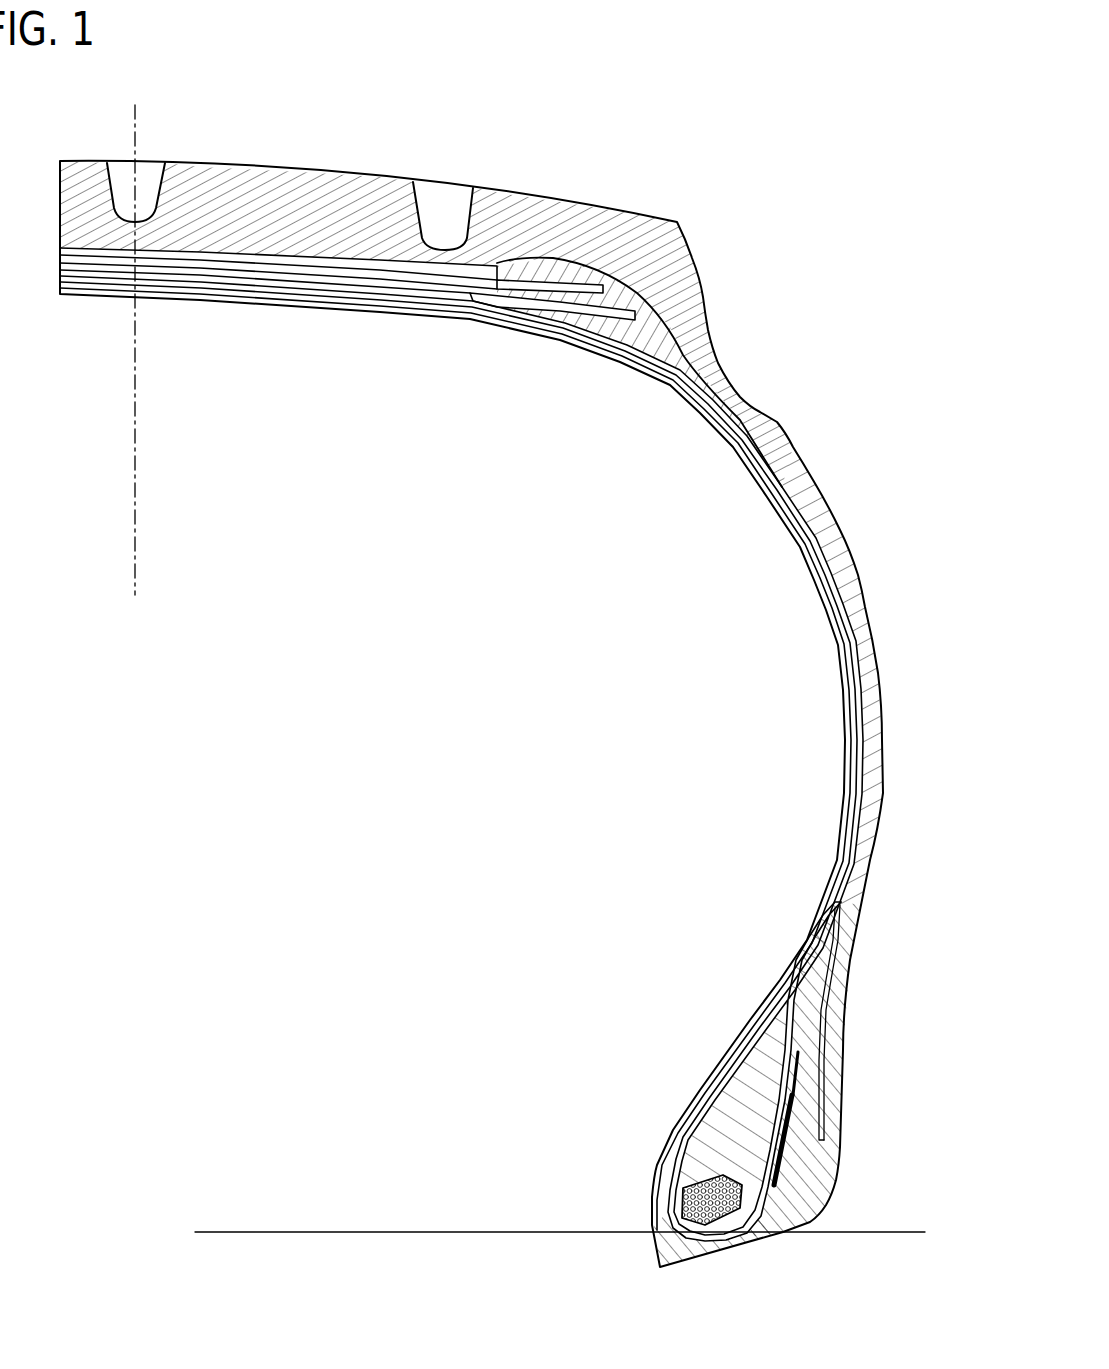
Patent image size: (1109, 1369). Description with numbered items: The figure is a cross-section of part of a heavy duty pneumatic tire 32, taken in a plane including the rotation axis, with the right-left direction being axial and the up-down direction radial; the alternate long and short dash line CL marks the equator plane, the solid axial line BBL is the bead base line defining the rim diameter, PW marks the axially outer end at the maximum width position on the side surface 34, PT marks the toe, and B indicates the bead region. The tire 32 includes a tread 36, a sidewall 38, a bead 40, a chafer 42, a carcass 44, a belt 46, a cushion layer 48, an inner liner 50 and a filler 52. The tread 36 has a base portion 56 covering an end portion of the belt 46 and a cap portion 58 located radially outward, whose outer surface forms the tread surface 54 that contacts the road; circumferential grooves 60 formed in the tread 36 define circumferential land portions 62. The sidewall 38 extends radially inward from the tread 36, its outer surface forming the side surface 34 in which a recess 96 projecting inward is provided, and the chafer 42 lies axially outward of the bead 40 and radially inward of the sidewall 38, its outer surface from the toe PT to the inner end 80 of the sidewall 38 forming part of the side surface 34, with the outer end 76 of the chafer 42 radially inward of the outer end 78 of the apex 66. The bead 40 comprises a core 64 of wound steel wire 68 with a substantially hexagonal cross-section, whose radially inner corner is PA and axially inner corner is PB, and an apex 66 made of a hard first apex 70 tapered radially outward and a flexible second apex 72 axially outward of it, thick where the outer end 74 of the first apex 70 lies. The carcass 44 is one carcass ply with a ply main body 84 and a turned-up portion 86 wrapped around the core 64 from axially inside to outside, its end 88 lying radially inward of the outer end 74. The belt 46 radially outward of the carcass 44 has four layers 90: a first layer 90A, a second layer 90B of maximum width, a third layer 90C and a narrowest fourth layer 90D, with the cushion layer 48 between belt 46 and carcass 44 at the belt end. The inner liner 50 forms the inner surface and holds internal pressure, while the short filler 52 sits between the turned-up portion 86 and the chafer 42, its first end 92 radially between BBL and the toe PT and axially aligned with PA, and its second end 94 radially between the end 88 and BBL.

The heavy duty pneumatic tire 32 is at (754, 201).
The side surface 34 is at (851, 561).
The tread 36 is at (339, 163).
The sidewall 38 is at (858, 615).
The bead 40 is at (723, 1068).
The chafer 42 is at (797, 1173).
The carcass 44 is at (232, 290).
The belt 46 is at (212, 250).
The cushion layer 48 is at (677, 370).
The inner liner 50 is at (172, 300).
The filler 52 is at (785, 1207).
The tread surface 54 is at (272, 160).
The base portion 56 is at (555, 258).
The cap portion 58 is at (513, 222).
The circumferential groove 60 is at (148, 160).
The circumferential land portion 62 is at (300, 200).
The core 64 is at (687, 1183).
The apex 66 is at (707, 1103).
The wire 68 is at (677, 1210).
The first apex 70 is at (700, 1147).
The second apex 72 is at (813, 992).
The outer end of the first apex 74 is at (797, 1003).
The outer end of the chafer 76 is at (827, 985).
The outer end of the second apex 78 is at (850, 897).
The inner end of the sidewall 80 is at (824, 1143).
The ply main body 84 is at (840, 840).
The turned-up portion 86 is at (805, 1082).
The end of the turned-up portion 88 is at (800, 1090).
The layer 90 is at (347, 284).
The first layer 90A is at (530, 312).
The second layer 90B is at (458, 288).
The third layer 90C is at (395, 275).
The fourth layer 90D is at (340, 268).
The first end of the filler 92 is at (703, 1237).
The second end of the filler 94 is at (799, 1103).
The recess 96 is at (857, 927).
The equator plane CL is at (140, 556).
The bead base line BBL is at (255, 1228).
The axially outer end of the tire PW is at (883, 760).
The axially inner end of the core PB is at (675, 1215).
The toe PT is at (663, 1268).
The radially inner end of the core PA is at (682, 1237).
The bead portion B is at (707, 1007).